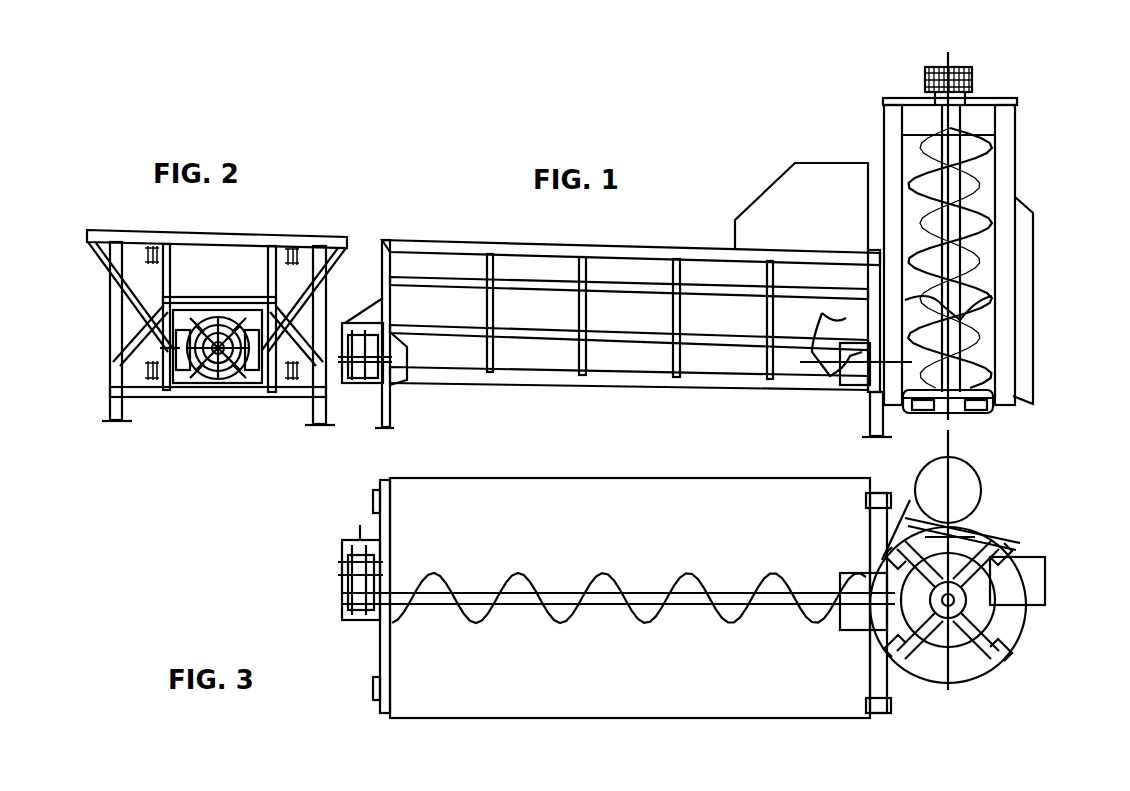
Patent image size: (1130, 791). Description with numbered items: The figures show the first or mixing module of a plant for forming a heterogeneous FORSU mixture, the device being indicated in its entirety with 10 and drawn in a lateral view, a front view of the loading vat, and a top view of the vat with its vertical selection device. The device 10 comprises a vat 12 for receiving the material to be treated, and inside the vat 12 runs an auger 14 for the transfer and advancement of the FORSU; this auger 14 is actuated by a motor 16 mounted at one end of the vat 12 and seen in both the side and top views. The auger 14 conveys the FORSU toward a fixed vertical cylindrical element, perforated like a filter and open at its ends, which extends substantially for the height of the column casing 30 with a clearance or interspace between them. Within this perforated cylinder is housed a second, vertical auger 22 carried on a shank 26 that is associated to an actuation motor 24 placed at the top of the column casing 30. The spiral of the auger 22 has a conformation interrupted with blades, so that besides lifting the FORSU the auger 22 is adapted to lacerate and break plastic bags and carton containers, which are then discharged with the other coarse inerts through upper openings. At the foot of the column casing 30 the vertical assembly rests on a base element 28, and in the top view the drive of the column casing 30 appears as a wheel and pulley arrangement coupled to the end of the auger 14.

In FIG. 1, the mixing device 10 is at (1046, 165).
In FIG. 2, the vat 12 is at (100, 254).
In FIG. 1, the vat 12 is at (448, 240).
In FIG. 3, the vat 12 is at (513, 718).
In FIG. 1, the auger 14 is at (822, 342).
In FIG. 3, the auger 14 is at (653, 613).
In FIG. 1, the motor 16 is at (360, 387).
In FIG. 3, the motor 16 is at (347, 560).
In FIG. 1, the auger 22 is at (935, 150).
In FIG. 1, the actuation motor 24 is at (970, 68).
In FIG. 1, the shank 26 is at (957, 298).
In FIG. 1, the base plate 28 is at (1000, 400).
In FIG. 1, the column casing 30 is at (1017, 113).
In FIG. 3, the column casing 30 is at (1033, 625).